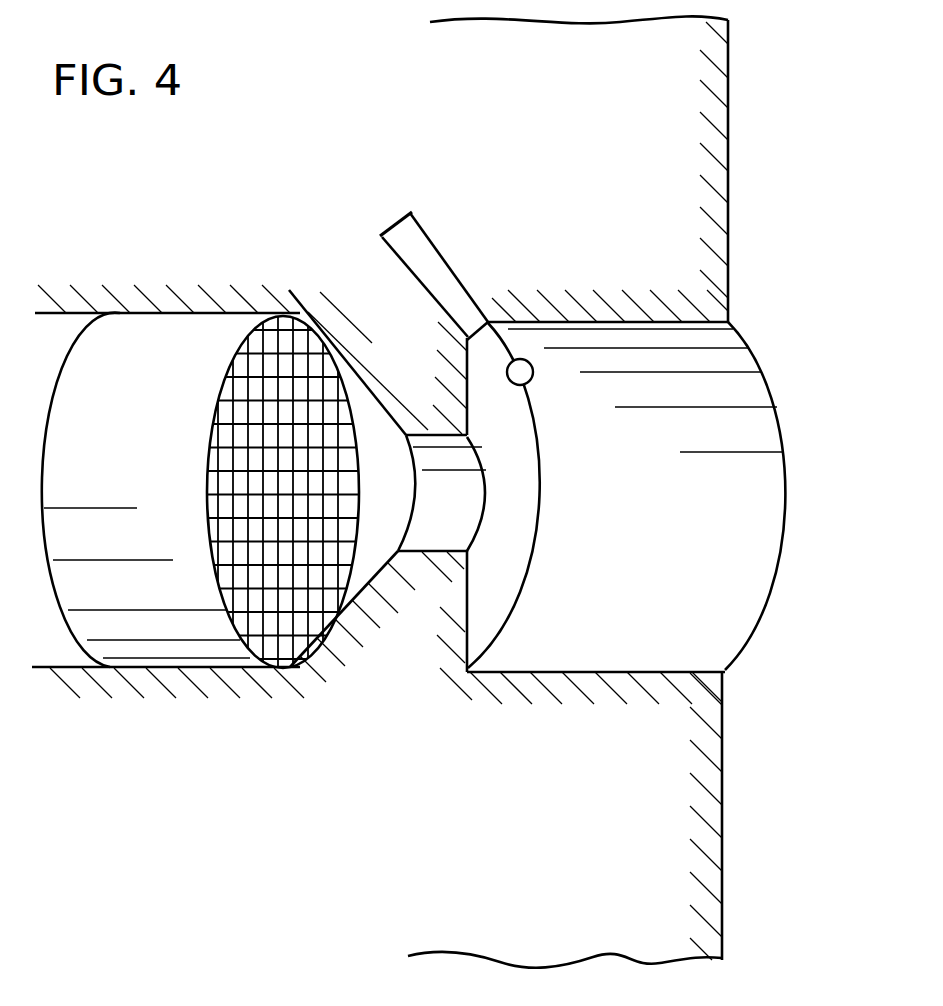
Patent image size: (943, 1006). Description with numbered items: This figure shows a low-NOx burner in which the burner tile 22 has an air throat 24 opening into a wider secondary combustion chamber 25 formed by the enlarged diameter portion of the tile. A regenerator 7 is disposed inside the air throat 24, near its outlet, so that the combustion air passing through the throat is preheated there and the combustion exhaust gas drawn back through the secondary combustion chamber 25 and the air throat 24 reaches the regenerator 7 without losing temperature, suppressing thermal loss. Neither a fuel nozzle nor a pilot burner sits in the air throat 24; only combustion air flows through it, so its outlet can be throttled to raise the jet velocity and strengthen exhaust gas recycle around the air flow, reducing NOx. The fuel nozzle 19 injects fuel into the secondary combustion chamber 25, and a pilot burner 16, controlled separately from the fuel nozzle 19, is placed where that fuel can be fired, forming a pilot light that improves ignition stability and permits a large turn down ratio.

The regenerator 7 is at (255, 632).
The pilot burner 16 is at (523, 362).
The fuel nozzle 19 is at (418, 250).
The burner tile 22 is at (702, 118).
The air throat 24 is at (476, 502).
The secondary combustion chamber 25 is at (658, 509).